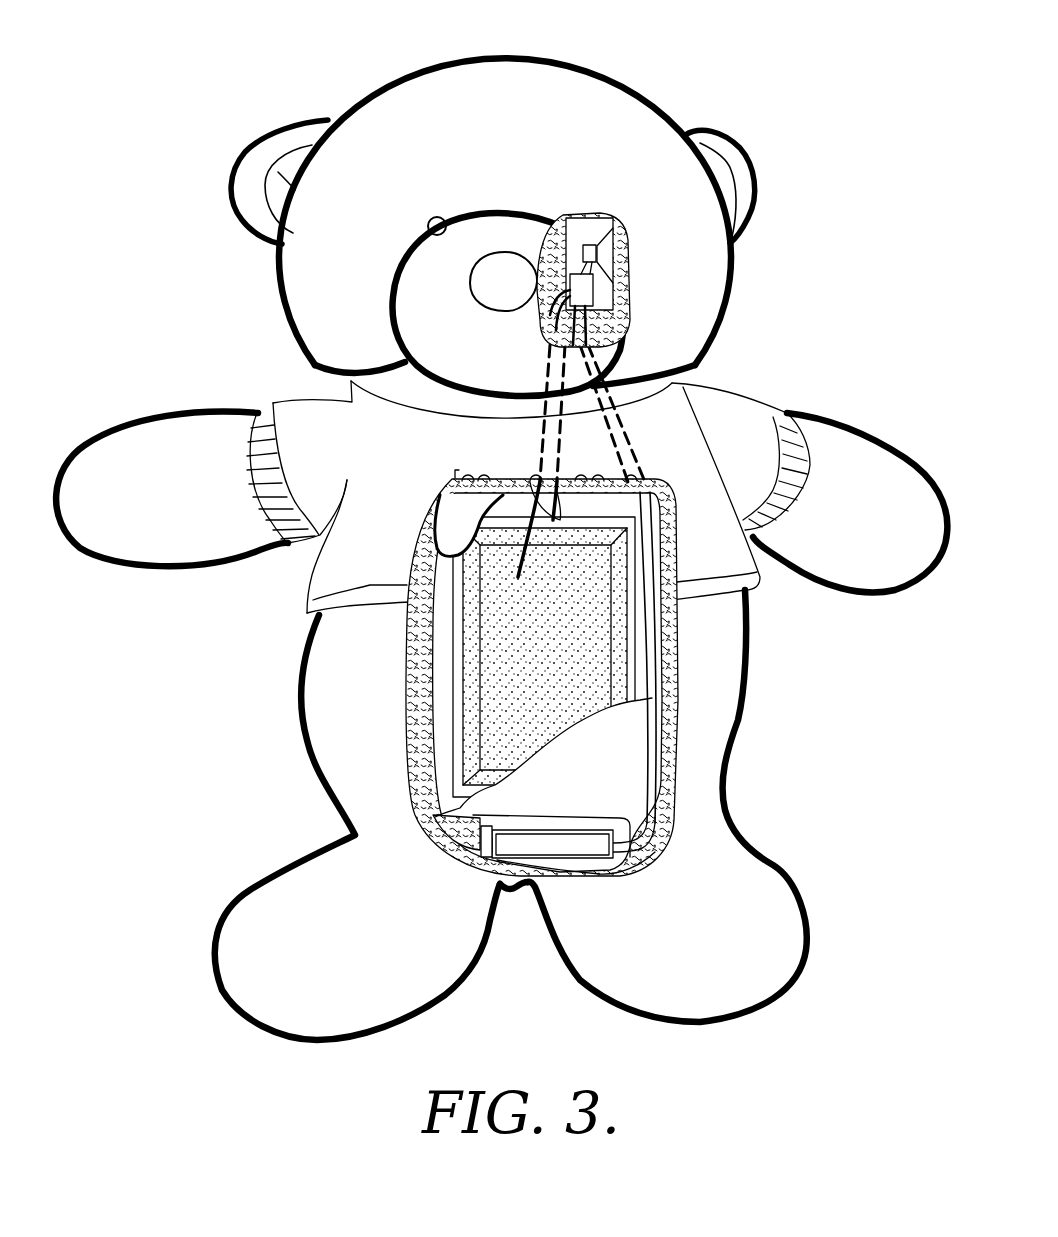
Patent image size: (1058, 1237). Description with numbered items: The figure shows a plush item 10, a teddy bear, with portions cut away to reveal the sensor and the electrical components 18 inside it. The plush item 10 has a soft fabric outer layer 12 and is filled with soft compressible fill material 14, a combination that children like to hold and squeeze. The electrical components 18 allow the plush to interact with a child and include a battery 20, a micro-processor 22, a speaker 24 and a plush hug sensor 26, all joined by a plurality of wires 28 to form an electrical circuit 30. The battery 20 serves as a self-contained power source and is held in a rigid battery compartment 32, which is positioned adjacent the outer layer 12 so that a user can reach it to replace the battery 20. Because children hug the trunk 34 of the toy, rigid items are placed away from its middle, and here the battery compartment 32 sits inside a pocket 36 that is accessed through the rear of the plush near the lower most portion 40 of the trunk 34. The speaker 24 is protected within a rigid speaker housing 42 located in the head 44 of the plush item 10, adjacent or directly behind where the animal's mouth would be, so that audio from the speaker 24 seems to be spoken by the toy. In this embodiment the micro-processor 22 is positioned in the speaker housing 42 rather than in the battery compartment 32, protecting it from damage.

The plush item 10 is at (583, 60).
The soft fabric outer layer 12 is at (323, 737).
The soft compressible fill material 14 is at (406, 637).
The electrical components 18 is at (667, 284).
The battery 20 is at (578, 853).
The micro-processor 22 is at (597, 292).
The speaker 24 is at (608, 250).
The plush hug sensor 26 is at (588, 657).
The wires 28 is at (530, 481).
The electrical circuit 30 is at (663, 508).
The battery compartment 32 is at (490, 828).
The trunk 34 is at (298, 651).
The pocket 36 is at (475, 825).
The lower most portion 40 is at (522, 896).
The speaker housing 42 is at (585, 220).
The head 44 is at (284, 287).